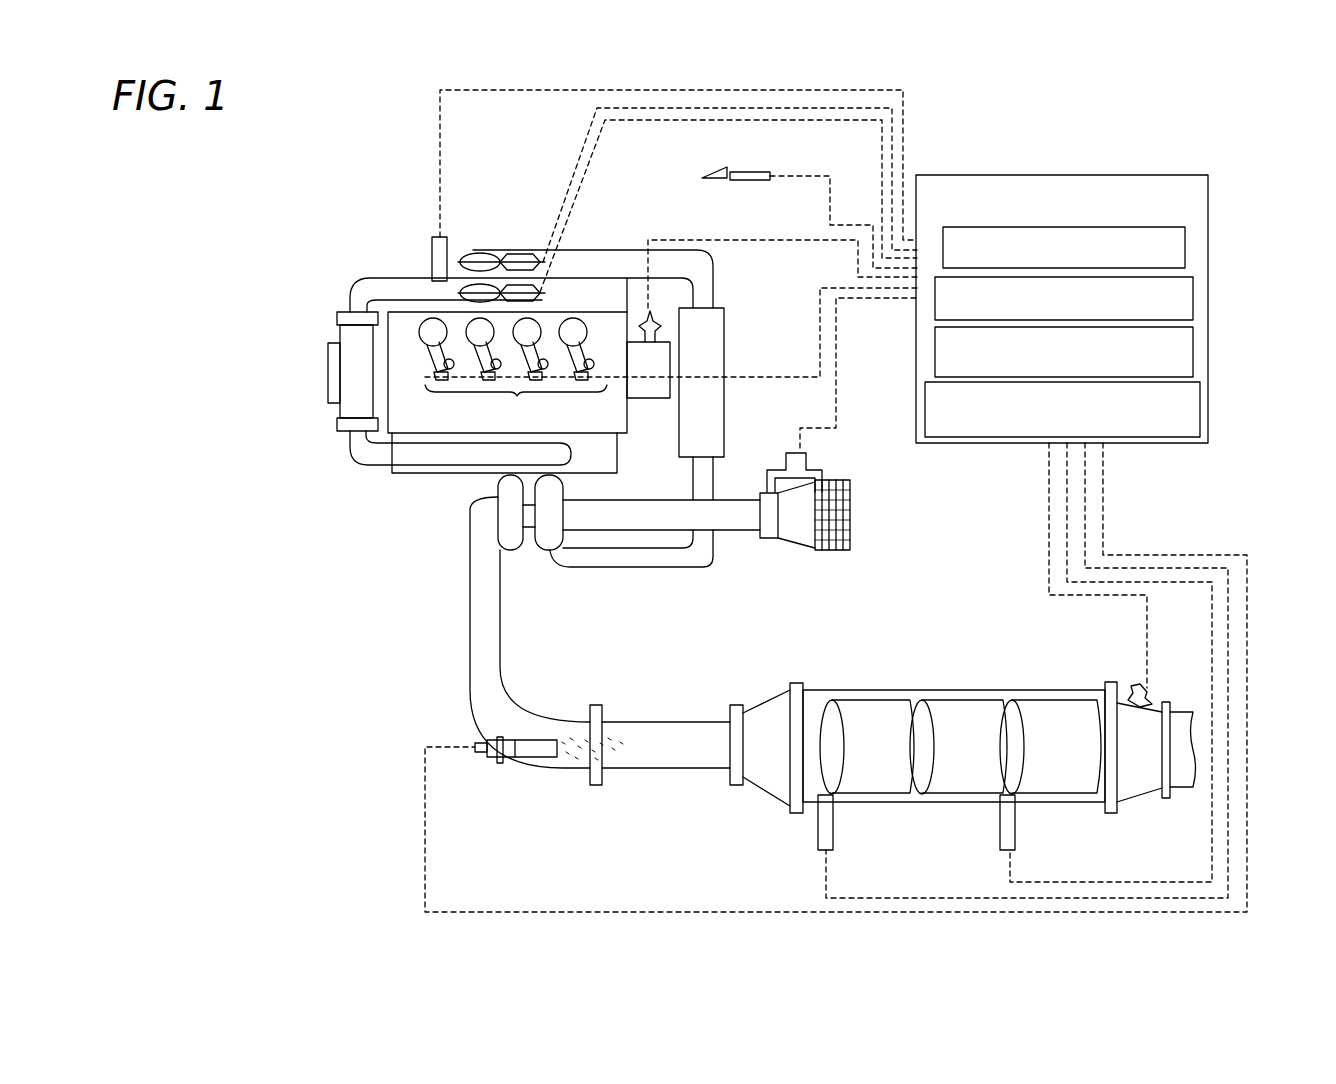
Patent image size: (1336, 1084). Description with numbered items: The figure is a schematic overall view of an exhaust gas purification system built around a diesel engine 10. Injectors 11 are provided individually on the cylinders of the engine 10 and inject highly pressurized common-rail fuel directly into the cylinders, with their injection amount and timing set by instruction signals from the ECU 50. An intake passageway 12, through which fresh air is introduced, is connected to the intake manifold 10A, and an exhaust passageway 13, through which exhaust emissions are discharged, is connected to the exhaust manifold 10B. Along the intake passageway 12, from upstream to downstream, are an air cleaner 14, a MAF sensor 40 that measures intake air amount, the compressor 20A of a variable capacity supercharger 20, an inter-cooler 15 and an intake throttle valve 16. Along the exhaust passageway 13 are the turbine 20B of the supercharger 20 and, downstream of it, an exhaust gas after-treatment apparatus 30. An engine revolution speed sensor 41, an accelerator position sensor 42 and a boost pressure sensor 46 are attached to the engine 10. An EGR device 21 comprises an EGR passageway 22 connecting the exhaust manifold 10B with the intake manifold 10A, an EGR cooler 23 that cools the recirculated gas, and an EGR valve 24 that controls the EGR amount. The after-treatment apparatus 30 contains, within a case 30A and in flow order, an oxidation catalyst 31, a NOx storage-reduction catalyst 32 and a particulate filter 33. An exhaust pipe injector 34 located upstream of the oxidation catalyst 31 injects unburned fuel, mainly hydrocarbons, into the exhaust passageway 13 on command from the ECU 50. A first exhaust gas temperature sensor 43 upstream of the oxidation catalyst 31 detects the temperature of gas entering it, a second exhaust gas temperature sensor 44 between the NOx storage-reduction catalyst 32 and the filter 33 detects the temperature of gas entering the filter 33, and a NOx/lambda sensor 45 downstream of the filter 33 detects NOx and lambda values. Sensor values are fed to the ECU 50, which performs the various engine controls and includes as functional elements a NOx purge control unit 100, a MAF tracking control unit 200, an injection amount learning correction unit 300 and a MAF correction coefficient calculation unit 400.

The diesel engine 10 is at (642, 322).
The intake manifold 10A is at (400, 282).
The exhaust manifold 10B is at (422, 474).
The injectors 11 is at (513, 370).
The intake passageway 12 is at (658, 568).
The exhaust passageway 13 is at (468, 607).
The air cleaner 14 is at (835, 480).
The inter-cooler 15 is at (724, 345).
The intake throttle valve 16 is at (512, 254).
The variable capacity supercharger 20 is at (547, 562).
The compressor 20A is at (565, 543).
The turbine 20B is at (512, 548).
The EGR device 21 is at (349, 262).
The EGR passageway 22 is at (370, 458).
The EGR cooler 23 is at (340, 368).
The EGR valve 24 is at (484, 290).
The exhaust gas after-treatment apparatus 30 is at (893, 706).
The case 30A is at (846, 690).
The oxidation catalyst 31 is at (862, 760).
The NOx storage-reduction catalyst 32 is at (952, 760).
The particulate filter 33 is at (1042, 760).
The exhaust pipe injector 34 is at (525, 760).
The MAF sensor 40 is at (798, 452).
The engine revolution speed sensor 41 is at (656, 316).
The accelerator position sensor 42 is at (750, 172).
The first exhaust gas temperature sensor 43 is at (835, 825).
The second exhaust gas temperature sensor 44 is at (1018, 825).
The NOx/lambda sensor 45 is at (1134, 689).
The boost pressure sensor 46 is at (432, 240).
The ECU 50 is at (1088, 287).
The NOx purge control unit 100 is at (1188, 247).
The MAF tracking control unit 200 is at (1195, 300).
The injection amount learning correction unit 300 is at (1195, 350).
The MAF correction coefficient calculation unit 400 is at (1202, 403).